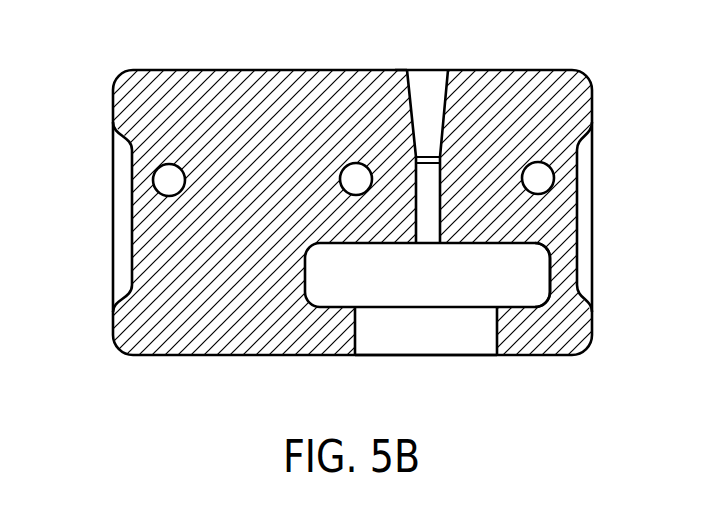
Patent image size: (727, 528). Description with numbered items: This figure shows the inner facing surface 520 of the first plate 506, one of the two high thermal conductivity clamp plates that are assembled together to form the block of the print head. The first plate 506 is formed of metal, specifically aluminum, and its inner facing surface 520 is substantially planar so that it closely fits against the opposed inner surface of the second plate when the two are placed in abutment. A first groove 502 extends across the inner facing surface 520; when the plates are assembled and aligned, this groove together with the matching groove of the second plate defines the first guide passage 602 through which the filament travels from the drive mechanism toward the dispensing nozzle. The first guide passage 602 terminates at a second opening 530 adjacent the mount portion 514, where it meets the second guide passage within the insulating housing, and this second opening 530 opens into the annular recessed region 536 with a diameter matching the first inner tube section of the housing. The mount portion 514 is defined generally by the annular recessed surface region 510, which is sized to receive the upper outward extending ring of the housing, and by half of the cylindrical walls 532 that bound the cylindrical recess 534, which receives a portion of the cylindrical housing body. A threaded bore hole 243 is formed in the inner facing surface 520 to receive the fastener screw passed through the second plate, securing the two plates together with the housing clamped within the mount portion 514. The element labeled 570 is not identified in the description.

The inner facing surface 520 is at (166, 91).
The threaded bore hole 243 is at (343, 165).
The first guide passage 602 is at (428, 96).
The annular recessed region 536 is at (404, 67).
The first groove 502 is at (441, 112).
The first plate 506 is at (590, 80).
The mount portion 514 is at (300, 262).
The second opening 530 is at (417, 250).
The annular recessed surface region 510 is at (330, 318).
The cylindrical recess 534 is at (467, 328).
The cylindrical walls 532 is at (497, 340).
The bottom surface 570 is at (543, 267).